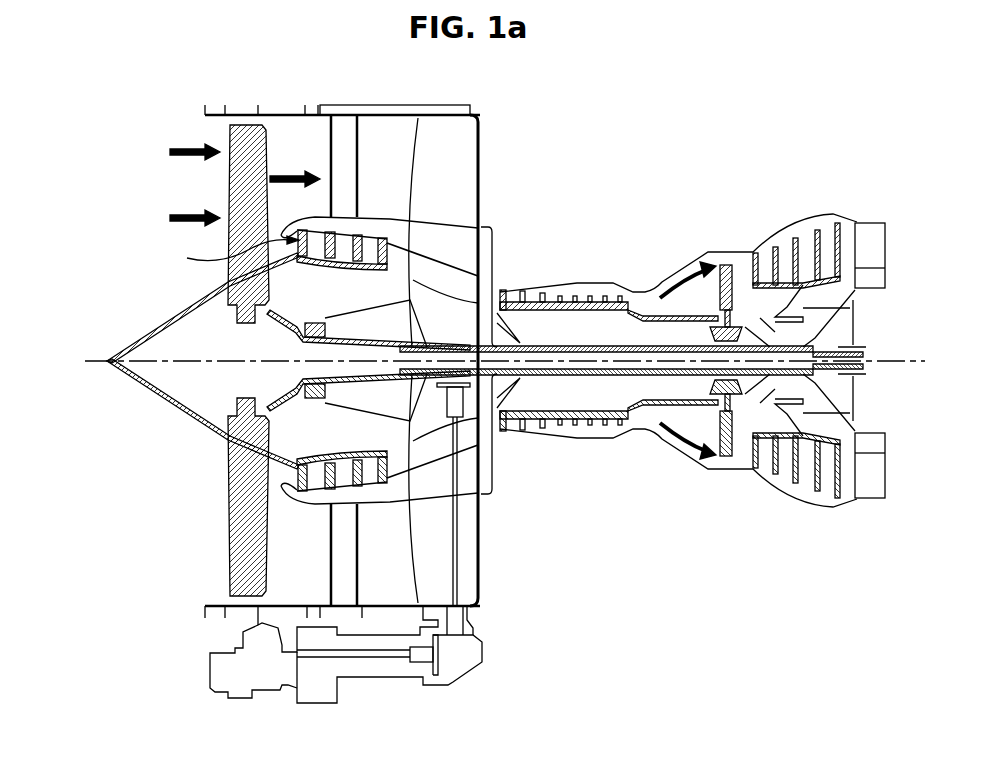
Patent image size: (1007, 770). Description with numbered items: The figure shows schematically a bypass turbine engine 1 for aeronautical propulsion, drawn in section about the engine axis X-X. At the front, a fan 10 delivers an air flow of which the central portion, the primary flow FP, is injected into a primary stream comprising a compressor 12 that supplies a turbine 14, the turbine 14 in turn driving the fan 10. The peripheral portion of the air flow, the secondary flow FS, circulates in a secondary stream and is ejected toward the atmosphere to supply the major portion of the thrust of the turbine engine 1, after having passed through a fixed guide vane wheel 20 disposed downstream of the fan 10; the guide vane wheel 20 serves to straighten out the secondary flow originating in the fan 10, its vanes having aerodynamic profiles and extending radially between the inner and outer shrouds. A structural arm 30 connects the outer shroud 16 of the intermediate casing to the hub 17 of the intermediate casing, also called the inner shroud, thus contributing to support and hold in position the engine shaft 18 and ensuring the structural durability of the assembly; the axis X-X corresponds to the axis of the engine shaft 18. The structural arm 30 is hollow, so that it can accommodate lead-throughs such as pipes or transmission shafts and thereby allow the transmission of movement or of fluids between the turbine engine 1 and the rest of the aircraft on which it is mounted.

The turbine engine 1 is at (100, 263).
The fan 10 is at (240, 497).
The compressor 12 is at (298, 303).
The turbine 14 is at (890, 508).
The outer shroud 16 is at (483, 113).
The hub 17 is at (603, 284).
The engine shaft 18 is at (472, 360).
The guide vane wheel 20 is at (375, 160).
The structural arm 30 is at (458, 181).